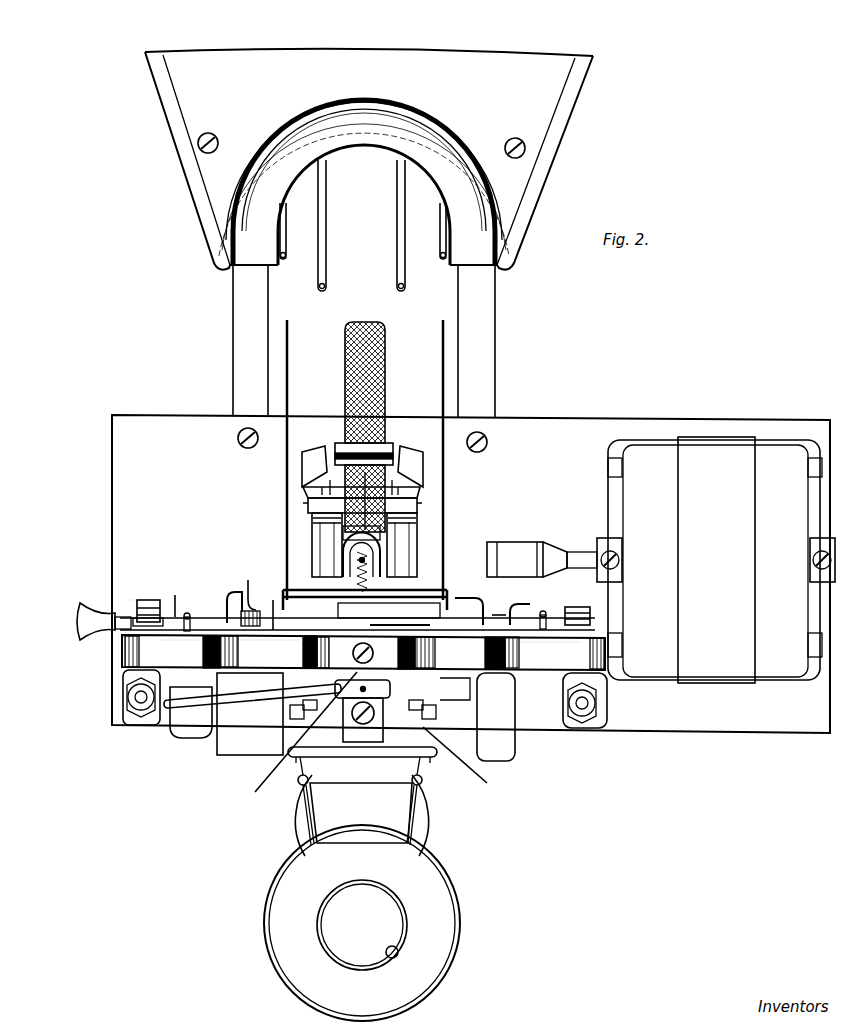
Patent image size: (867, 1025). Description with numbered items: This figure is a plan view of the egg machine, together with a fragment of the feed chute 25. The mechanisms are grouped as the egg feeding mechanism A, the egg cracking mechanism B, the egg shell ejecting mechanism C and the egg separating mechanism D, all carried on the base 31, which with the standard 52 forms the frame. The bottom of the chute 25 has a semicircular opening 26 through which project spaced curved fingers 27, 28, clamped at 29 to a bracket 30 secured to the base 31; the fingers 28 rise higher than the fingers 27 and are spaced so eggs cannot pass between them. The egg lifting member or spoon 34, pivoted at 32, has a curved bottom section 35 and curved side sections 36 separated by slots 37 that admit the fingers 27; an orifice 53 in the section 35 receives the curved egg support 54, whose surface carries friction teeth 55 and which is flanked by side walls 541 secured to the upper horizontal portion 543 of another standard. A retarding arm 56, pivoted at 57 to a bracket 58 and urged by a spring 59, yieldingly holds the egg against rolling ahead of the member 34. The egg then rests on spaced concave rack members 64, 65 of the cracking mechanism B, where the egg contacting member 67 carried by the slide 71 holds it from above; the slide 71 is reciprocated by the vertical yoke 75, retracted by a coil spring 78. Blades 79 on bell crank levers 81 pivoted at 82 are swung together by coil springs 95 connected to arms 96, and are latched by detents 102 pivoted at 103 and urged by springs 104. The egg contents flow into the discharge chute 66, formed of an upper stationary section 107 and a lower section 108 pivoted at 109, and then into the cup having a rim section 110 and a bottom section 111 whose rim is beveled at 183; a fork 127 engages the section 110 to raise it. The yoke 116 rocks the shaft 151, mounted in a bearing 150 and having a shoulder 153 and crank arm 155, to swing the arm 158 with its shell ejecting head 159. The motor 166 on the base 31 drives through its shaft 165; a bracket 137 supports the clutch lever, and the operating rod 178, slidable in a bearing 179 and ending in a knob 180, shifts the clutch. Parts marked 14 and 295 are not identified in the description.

The feed chute 25 is at (577, 85).
The semicircular opening 26 is at (376, 146).
The curved fingers 27 is at (397, 186).
The curved fingers 28 is at (440, 260).
The clamp 29 is at (198, 142).
The bracket 30 is at (242, 293).
The base 31 is at (763, 727).
The side walls 541 is at (287, 338).
The teeth 55 is at (365, 358).
The curved egg support 54 is at (347, 390).
The curved bottom section 35 is at (341, 432).
The orifice 53 is at (366, 478).
The egg lifting member 34 is at (300, 464).
The slots 37 is at (425, 478).
The curved side sections 36 is at (310, 485).
The pivot 32 is at (308, 505).
The upper horizontal portion 543 is at (313, 520).
The retarding arm 56 is at (345, 533).
The pivot 57 is at (327, 545).
The bracket 58 is at (381, 550).
The spring 59 is at (373, 575).
The shoulder 153 is at (334, 604).
The rail 14 is at (445, 612).
The rock shaft 151 is at (470, 586).
The concave rack member 64 is at (436, 669).
The coil spring 78 is at (352, 653).
The crank arm 155 is at (392, 636).
The vertical yoke 75 is at (300, 647).
The detent 102 is at (186, 644).
The knob 180 is at (86, 630).
The pivot 103 is at (150, 600).
The coil springs 104 is at (187, 614).
The arms 96 is at (234, 620).
The coil springs 95 is at (255, 620).
The bearing 179 is at (134, 598).
The operating rod 178 is at (175, 595).
The yoke 116 is at (248, 580).
The standard 52 is at (222, 640).
The terminal 295 is at (500, 613).
The bracket 137 is at (512, 590).
The shaft 165 is at (542, 551).
The electric motor 166 is at (703, 450).
The pivot 82 is at (474, 700).
The egg shell ejecting mechanism C is at (191, 741).
The shell ejecting head 159 is at (170, 727).
The arm 158 is at (222, 690).
The bell crank levers 81 is at (262, 690).
The slide 71 is at (384, 720).
The blades 79 is at (322, 715).
The bearing 150 is at (262, 758).
The egg cracking mechanism B is at (462, 763).
The concave rack member 65 is at (362, 757).
The upper stationary section 107 is at (422, 779).
The egg contacting member 67 is at (300, 782).
The lower pivoted section 108 is at (395, 828).
The discharge chute 66 is at (419, 805).
The pivot 109 is at (298, 800).
The fork 127 is at (296, 843).
The rim section 110 is at (266, 888).
The bottom section 111 is at (334, 936).
The beveled rim 183 is at (394, 958).
The egg separating mechanism D is at (471, 925).
The egg feeding mechanism A is at (414, 450).